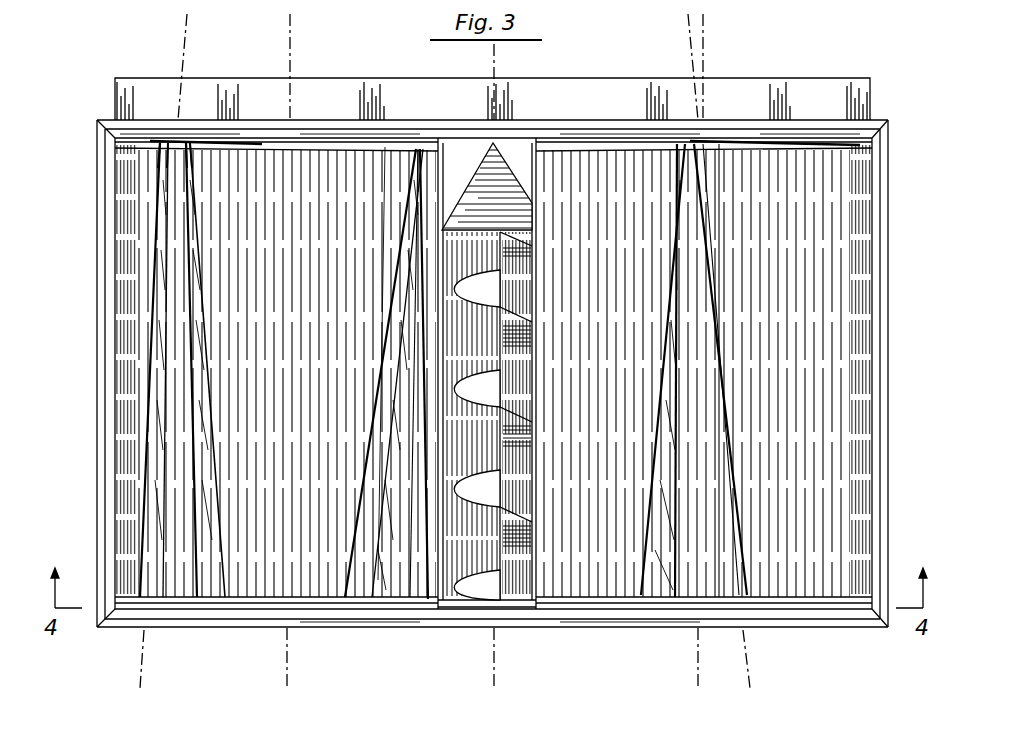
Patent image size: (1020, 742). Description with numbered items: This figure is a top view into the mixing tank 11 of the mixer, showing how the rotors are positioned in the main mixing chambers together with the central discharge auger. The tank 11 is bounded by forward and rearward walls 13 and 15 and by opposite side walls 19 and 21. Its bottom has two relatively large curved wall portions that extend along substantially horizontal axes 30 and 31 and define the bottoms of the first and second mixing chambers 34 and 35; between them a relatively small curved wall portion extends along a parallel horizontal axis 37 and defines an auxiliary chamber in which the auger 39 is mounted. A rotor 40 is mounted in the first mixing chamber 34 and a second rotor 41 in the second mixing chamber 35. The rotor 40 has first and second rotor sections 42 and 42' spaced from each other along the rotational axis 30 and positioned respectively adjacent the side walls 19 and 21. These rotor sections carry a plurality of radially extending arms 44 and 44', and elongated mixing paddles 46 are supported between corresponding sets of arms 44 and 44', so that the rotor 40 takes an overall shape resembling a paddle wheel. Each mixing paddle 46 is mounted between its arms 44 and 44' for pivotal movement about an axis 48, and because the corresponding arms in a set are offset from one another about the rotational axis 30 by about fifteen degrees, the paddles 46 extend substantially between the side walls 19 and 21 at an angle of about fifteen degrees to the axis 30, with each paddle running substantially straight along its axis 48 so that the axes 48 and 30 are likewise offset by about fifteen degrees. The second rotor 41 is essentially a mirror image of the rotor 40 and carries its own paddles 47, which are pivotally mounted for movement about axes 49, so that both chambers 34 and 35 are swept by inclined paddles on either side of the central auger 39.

The mixing tank 11 is at (818, 58).
The forward wall 13 is at (96, 420).
The rearward wall 15 is at (890, 412).
The side wall 19 is at (333, 628).
The side wall 21 is at (420, 118).
The horizontal axis 30 is at (290, 46).
The horizontal axis 31 is at (703, 40).
The first mixing chamber 34 is at (146, 173).
The second mixing chamber 35 is at (798, 200).
The horizontal axis 37 is at (494, 57).
The auger 39 is at (467, 600).
The rotor 40 is at (256, 335).
The second rotor 41 is at (733, 312).
The first rotor section 42 is at (219, 404).
The second rotor section 42' is at (233, 105).
The radially extending arm 44 is at (168, 404).
The radially extending arm 44' is at (193, 105).
The mixing paddle 46 is at (140, 525).
The paddle 47 is at (738, 527).
The pivot axis 48 is at (186, 41).
The pivot axis 49 is at (694, 42).